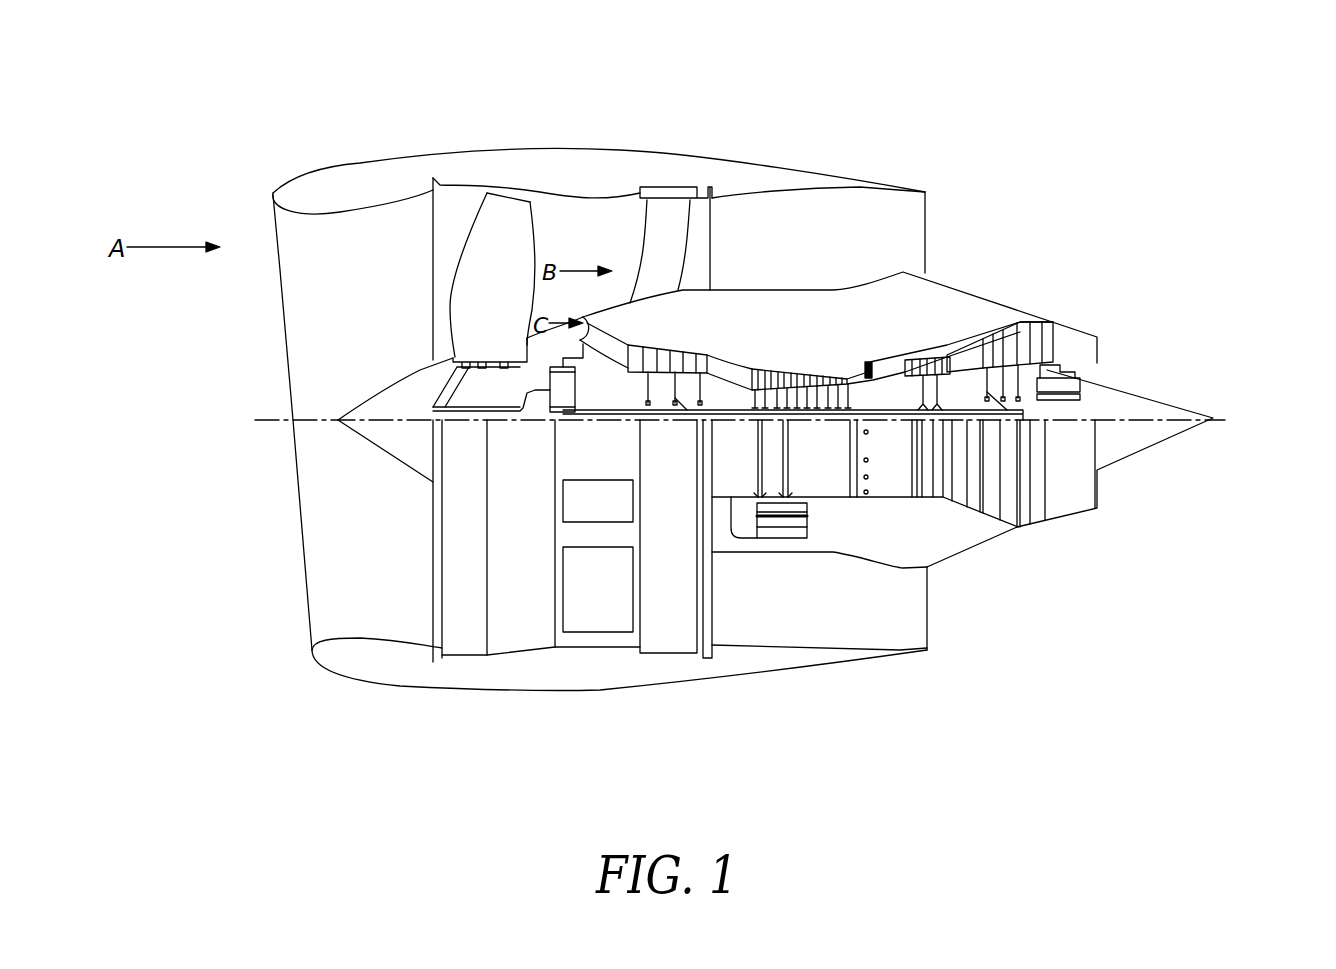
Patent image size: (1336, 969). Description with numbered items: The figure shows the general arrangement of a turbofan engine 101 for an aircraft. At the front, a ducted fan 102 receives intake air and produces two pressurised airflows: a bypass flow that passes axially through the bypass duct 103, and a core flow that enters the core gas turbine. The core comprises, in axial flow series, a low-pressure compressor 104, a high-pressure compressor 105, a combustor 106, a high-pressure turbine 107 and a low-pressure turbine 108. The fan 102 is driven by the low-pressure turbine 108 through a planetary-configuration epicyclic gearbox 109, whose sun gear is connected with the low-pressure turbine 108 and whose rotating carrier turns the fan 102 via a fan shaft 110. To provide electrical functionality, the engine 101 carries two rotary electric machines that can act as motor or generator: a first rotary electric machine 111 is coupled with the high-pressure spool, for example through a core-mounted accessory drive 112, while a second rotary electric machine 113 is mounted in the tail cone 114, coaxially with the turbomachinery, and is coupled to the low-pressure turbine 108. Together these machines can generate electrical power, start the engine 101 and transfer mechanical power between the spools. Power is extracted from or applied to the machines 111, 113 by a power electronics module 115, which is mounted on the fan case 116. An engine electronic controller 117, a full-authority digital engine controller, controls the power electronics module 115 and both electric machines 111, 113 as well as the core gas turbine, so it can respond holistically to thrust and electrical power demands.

The engine 101 is at (336, 96).
The ducted fan 102 is at (514, 291).
The bypass duct 103 is at (603, 241).
The low-pressure compressor 104 is at (688, 335).
The high-pressure compressor 105 is at (820, 352).
The combustor 106 is at (876, 342).
The high-pressure turbine 107 is at (920, 345).
The low-pressure turbine 108 is at (1000, 318).
The epicyclic gearbox 109 is at (590, 383).
The fan shaft 110 is at (498, 405).
The first rotary electric machine 111 is at (807, 520).
The core-mounted accessory drive 112 is at (745, 523).
The second rotary electric machine 113 is at (1068, 364).
The tail cone 114 is at (1162, 402).
The power electronics module 115 is at (562, 580).
The fan case 116 is at (462, 562).
The engine electronic controller 117 is at (562, 500).